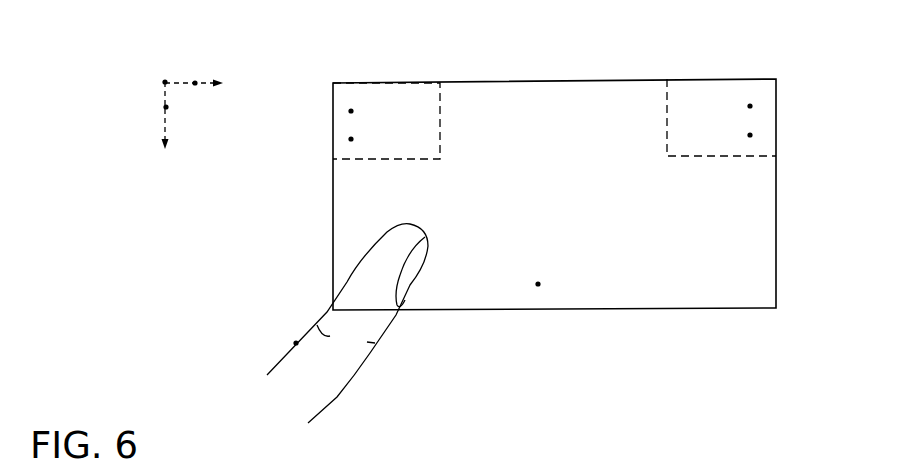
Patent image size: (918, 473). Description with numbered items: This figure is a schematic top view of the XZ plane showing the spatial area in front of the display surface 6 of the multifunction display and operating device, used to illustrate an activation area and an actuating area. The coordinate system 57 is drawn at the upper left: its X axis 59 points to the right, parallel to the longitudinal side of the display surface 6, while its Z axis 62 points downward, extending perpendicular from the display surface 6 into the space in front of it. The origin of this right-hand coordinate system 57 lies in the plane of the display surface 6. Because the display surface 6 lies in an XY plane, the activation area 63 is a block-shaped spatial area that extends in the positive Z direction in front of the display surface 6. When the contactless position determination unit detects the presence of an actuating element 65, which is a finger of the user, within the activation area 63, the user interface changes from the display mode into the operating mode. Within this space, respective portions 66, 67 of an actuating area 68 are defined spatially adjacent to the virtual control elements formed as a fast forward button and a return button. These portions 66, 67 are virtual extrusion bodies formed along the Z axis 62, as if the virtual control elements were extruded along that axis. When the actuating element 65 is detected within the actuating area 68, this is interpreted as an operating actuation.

The display surface 6 is at (582, 81).
The coordinate system 57 is at (165, 82).
The X axis 59 is at (195, 83).
The Z axis 62 is at (166, 107).
The activation area 63 is at (538, 284).
The actuating element 65 is at (296, 343).
The portion of the actuating area 66 is at (351, 139).
The portion of the actuating area 67 is at (750, 135).
The actuating area 68 is at (351, 111).